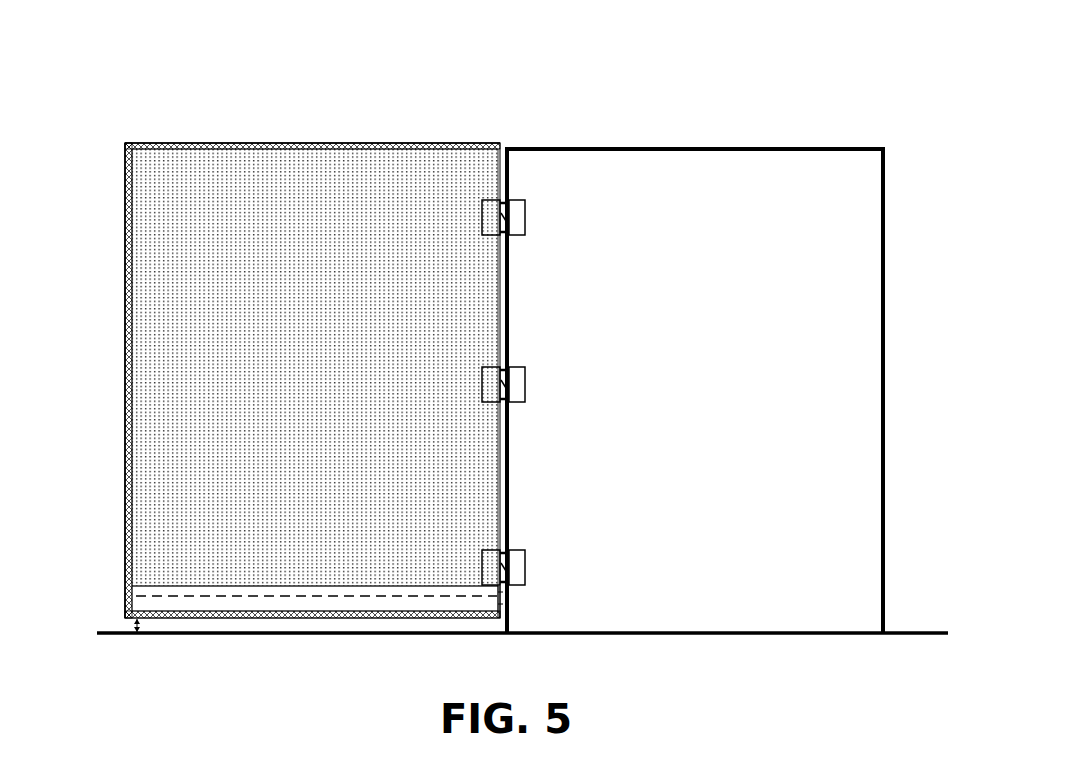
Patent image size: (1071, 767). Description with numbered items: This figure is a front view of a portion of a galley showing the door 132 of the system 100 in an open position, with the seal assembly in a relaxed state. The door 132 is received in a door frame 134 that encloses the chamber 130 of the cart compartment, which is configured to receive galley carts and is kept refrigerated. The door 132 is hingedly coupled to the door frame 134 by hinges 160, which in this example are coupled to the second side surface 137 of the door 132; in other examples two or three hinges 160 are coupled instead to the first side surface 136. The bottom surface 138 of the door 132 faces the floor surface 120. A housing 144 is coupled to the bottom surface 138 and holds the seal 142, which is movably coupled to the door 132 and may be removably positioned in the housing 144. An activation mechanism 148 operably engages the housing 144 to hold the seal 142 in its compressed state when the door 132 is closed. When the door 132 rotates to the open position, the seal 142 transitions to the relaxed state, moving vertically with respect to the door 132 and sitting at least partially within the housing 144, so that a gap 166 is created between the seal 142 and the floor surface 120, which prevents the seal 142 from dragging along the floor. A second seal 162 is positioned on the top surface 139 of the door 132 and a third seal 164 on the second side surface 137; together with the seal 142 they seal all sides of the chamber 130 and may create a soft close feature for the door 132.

The system 100 is at (94, 44).
The floor surface 120 is at (170, 638).
The chamber 130 is at (770, 262).
The door 132 is at (395, 165).
The door frame 134 is at (720, 146).
The first side surface 136 is at (127, 367).
The second side surface 137 is at (507, 323).
The bottom surface 138 is at (281, 596).
The top surface 139 is at (193, 141).
The seal 142 is at (297, 617).
The housing 144 is at (388, 590).
The activation mechanism 148 is at (500, 596).
The hinge 160 is at (531, 207).
The second seal 162 is at (279, 143).
The third seal 164 is at (127, 297).
The gap 166 is at (132, 622).